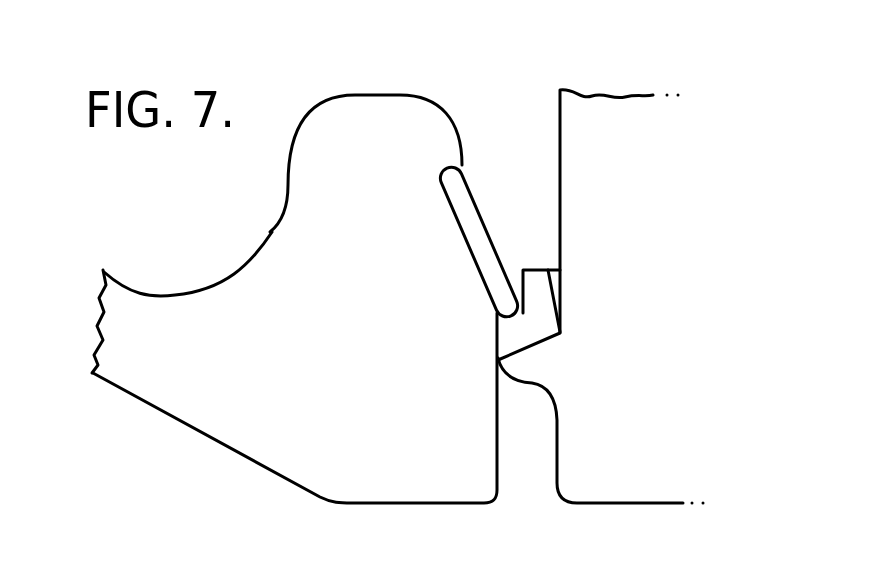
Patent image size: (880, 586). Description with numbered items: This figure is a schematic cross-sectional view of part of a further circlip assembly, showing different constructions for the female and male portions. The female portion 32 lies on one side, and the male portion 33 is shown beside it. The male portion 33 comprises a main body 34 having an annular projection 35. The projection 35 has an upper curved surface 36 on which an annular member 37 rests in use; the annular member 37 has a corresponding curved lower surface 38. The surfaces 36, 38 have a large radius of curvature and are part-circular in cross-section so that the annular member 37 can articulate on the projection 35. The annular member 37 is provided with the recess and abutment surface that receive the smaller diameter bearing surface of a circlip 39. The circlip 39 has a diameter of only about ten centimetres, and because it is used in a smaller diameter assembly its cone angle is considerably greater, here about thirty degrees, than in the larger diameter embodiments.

The female portion 32 is at (322, 438).
The male portion 33 is at (618, 530).
The main body 34 is at (607, 225).
The annular projection 35 is at (527, 364).
The upper curved surface 36 is at (560, 333).
The annular member 37 is at (535, 293).
The lower surface 38 is at (523, 347).
The circlip 39 is at (478, 243).